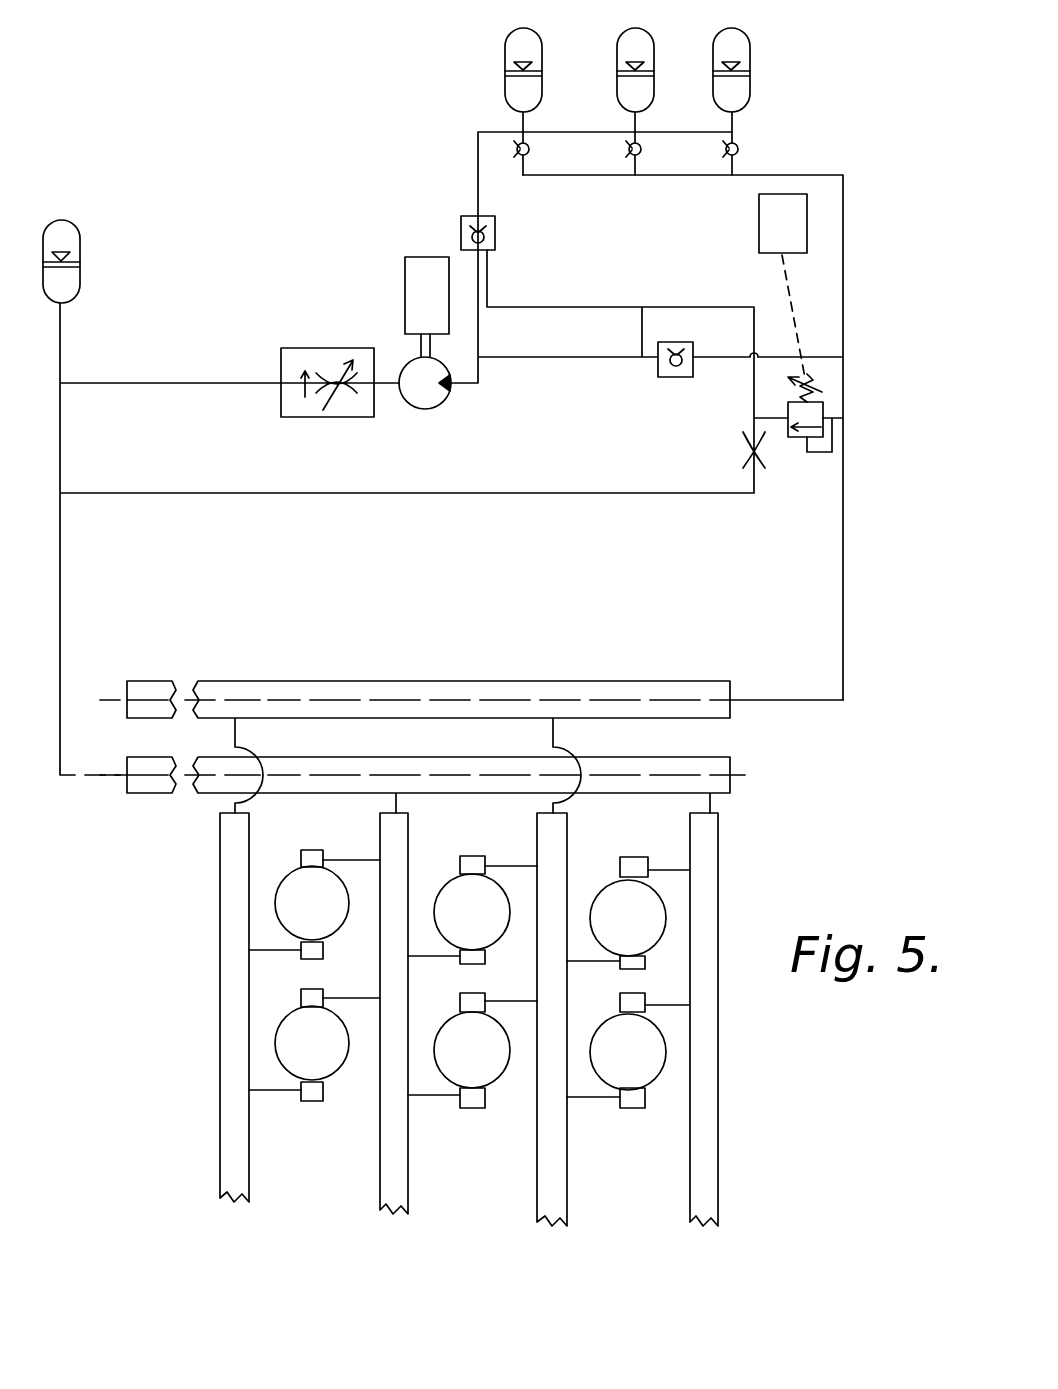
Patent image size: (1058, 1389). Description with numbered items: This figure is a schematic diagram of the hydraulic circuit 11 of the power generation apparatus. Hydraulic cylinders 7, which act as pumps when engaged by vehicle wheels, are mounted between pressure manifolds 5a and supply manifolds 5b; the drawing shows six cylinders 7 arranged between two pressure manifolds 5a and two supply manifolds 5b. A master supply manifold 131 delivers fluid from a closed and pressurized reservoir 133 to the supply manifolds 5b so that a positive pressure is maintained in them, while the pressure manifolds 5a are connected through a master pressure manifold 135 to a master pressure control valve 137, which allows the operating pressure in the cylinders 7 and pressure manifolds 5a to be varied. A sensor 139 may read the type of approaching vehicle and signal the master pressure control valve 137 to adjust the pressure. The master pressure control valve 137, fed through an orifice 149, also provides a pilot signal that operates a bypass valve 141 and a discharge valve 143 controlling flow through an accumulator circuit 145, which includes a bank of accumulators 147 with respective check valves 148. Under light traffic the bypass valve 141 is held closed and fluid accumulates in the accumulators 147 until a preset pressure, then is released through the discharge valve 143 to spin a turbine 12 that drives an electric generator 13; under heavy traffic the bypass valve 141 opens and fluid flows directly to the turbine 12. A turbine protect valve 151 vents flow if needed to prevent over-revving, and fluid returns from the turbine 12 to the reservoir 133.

The accumulator circuit 145 is at (418, 158).
The accumulators 147 is at (722, 32).
The check valves 148 is at (530, 146).
The discharge valve 143 is at (496, 226).
The sensor 139 is at (758, 214).
The electric generator 13 is at (405, 274).
The turbine 12 is at (444, 406).
The turbine protect valve 151 is at (310, 418).
The bypass valve 141 is at (672, 378).
The master pressure control valve 137 is at (824, 410).
The orifice 149 is at (745, 450).
The reservoir 133 is at (80, 228).
The master pressure manifold 135 is at (632, 681).
The master supply manifold 131 is at (632, 757).
The hydraulic circuit 11 is at (845, 743).
The pressure manifolds 5a is at (249, 1150).
The supply manifolds 5b is at (408, 1152).
The hydraulic cylinders 7 is at (345, 932).